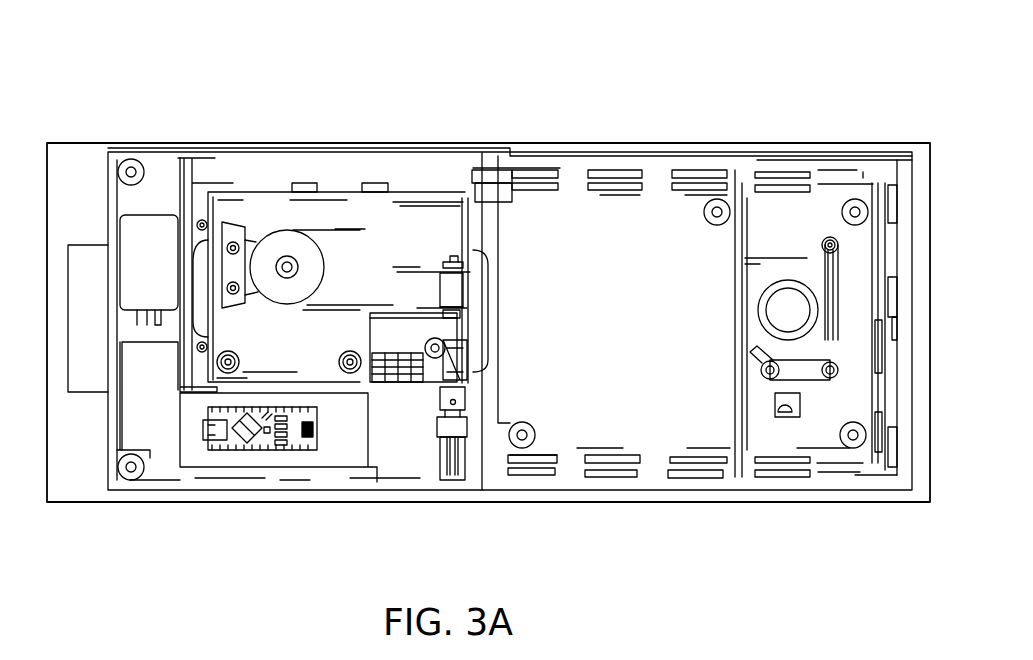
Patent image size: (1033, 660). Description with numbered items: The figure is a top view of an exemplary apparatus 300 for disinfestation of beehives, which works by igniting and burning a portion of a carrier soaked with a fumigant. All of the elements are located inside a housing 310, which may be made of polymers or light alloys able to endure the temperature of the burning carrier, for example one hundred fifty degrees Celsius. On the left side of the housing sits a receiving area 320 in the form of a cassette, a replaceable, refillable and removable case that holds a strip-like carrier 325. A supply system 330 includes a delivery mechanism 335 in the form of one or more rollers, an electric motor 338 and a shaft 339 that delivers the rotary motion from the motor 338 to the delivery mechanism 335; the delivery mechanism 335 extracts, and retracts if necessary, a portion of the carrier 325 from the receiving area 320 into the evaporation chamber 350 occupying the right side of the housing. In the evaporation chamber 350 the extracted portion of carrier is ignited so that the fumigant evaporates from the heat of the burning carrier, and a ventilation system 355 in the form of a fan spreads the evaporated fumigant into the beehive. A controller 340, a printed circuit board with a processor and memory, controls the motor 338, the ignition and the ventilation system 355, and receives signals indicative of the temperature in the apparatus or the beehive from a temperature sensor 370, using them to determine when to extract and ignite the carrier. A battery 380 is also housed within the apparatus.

The apparatus 300 is at (203, 78).
The housing 310 is at (503, 147).
The receiving area 320 is at (338, 215).
The carrier 325 is at (277, 243).
The supply system 330 is at (428, 347).
The delivery mechanism 335 is at (453, 283).
The electric motor 338 is at (447, 482).
The shaft 339 is at (457, 340).
The controller 340 is at (248, 448).
The evaporation chamber 350 is at (560, 412).
The ventilation system 355 is at (783, 300).
The temperature sensor 370 is at (798, 408).
The battery 380 is at (128, 228).